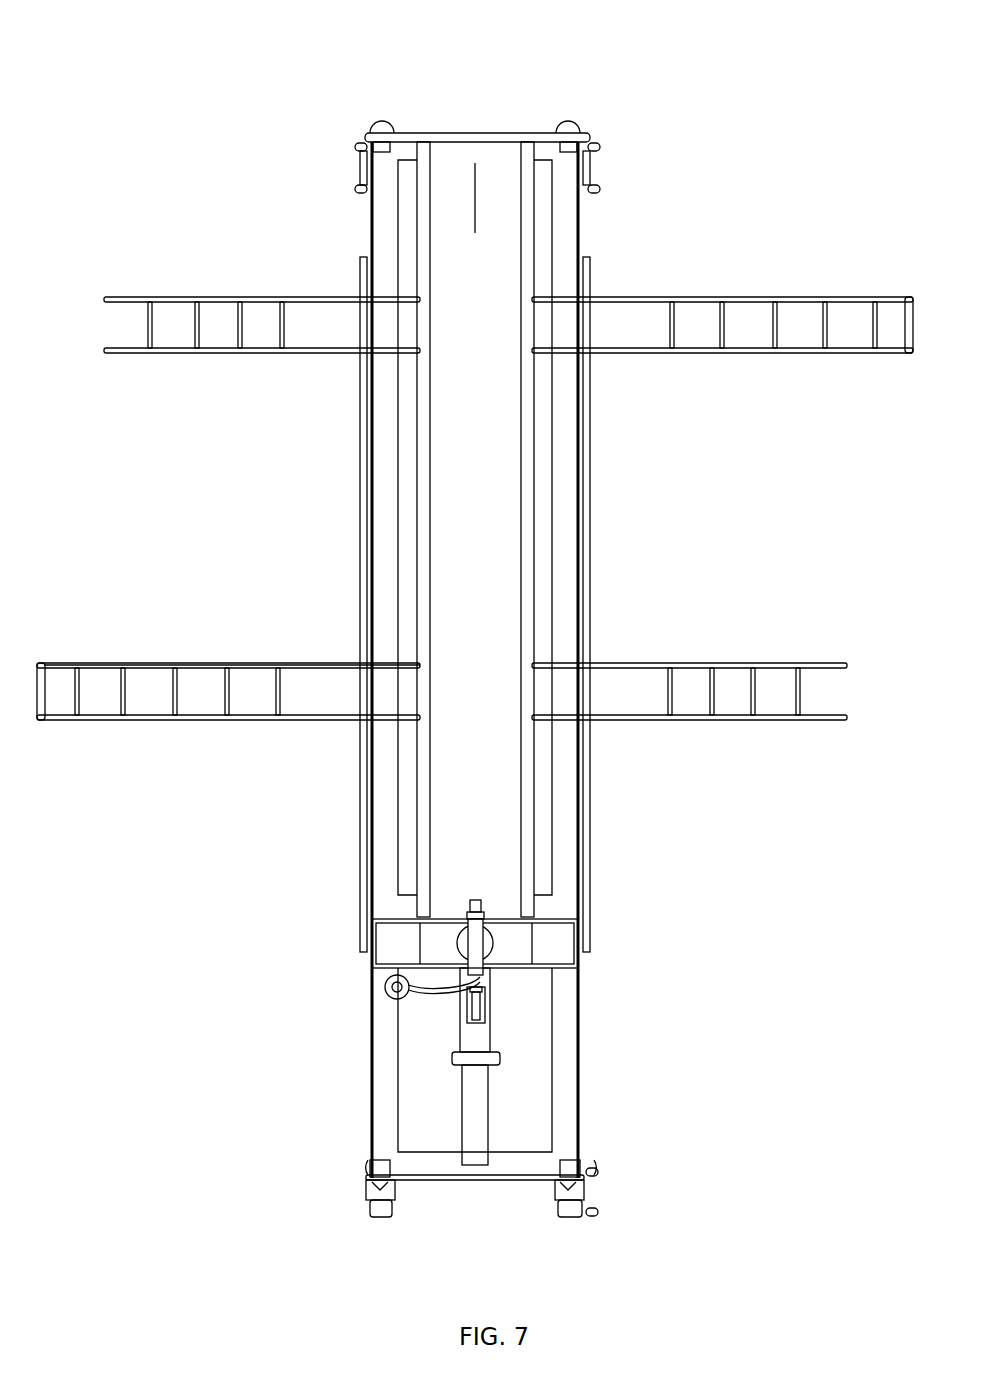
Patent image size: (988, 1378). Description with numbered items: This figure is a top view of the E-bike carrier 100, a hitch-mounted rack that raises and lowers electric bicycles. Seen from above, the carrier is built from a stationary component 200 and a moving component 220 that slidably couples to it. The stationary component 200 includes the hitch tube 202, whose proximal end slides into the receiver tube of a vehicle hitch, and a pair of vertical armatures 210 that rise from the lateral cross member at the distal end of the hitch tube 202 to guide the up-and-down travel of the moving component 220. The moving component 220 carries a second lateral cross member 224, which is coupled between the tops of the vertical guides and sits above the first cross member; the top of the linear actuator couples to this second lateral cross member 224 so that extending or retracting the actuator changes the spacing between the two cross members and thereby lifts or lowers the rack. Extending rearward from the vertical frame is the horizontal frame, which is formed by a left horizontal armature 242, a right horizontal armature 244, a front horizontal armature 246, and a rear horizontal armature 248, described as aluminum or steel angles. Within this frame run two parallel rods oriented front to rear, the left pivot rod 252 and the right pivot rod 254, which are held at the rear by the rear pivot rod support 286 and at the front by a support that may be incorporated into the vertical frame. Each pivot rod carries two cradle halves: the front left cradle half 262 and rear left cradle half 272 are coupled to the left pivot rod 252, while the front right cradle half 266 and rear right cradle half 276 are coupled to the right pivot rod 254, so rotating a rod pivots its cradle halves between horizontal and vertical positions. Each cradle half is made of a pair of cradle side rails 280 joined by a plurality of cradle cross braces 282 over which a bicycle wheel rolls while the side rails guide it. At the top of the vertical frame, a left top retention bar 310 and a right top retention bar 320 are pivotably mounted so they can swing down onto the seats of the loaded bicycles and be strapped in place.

The E-bike carrier 100 is at (103, 180).
The stationary component 200 is at (450, 1015).
The hitch tube 202 is at (480, 1088).
The pair of vertical armatures 210 is at (388, 948).
The moving component 220 is at (357, 792).
The second lateral cross member 224 is at (510, 917).
The left horizontal armature 242 is at (570, 585).
The right horizontal armature 244 is at (382, 563).
The front horizontal armature 246 is at (456, 1165).
The rear horizontal armature 248 is at (475, 222).
The left pivot rod 252 is at (530, 510).
The right pivot rod 254 is at (420, 472).
The front left cradle half 262 is at (847, 727).
The front right cradle half 266 is at (420, 727).
The rear left cradle half 272 is at (913, 360).
The rear right cradle half 276 is at (420, 360).
The pair of cradle side rails 280 is at (113, 710).
The plurality of cradle cross braces 282 is at (225, 686).
The rear pivot rod support 286 is at (508, 138).
The left top retention bar 310 is at (585, 833).
The right top retention bar 320 is at (362, 628).